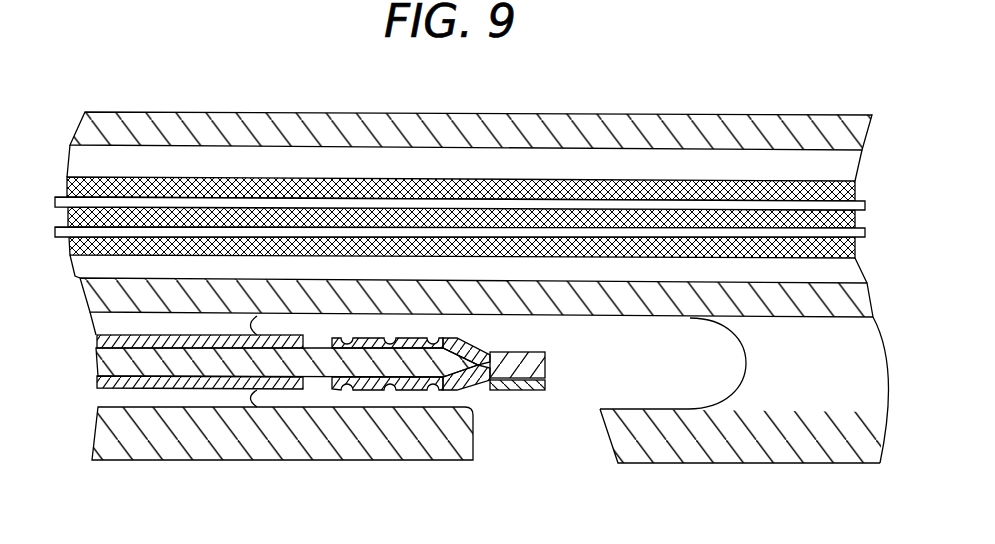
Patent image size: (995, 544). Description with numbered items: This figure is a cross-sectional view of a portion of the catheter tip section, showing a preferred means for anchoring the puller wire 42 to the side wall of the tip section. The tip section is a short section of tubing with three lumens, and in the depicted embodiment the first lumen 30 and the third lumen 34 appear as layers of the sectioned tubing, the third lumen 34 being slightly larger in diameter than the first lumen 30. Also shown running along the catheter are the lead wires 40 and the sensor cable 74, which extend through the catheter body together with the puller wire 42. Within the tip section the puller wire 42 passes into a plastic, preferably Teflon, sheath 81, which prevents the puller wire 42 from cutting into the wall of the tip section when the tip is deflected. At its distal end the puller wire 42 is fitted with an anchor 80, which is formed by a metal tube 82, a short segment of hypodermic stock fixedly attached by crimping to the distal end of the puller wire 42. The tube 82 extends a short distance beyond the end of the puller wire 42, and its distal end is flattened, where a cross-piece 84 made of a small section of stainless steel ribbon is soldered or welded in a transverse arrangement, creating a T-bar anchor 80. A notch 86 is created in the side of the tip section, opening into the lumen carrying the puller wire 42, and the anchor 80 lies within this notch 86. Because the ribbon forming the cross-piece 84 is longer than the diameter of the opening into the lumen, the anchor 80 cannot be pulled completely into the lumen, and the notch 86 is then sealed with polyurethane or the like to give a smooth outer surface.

The third lumen 34 is at (97, 161).
The sensor cable 74 is at (813, 187).
The lead wires 40 is at (56, 207).
The first lumen 30 is at (118, 322).
The sheath 81 is at (110, 380).
The puller wire 42 is at (238, 365).
The metal tube 82 is at (405, 385).
The notch 86 is at (473, 433).
The anchor 80 is at (481, 396).
The cross-piece 84 is at (528, 391).